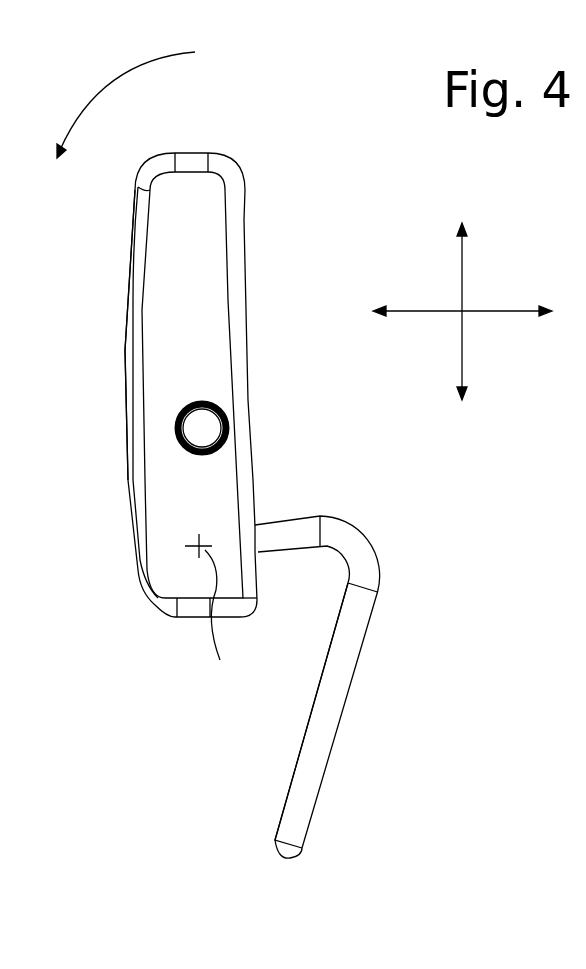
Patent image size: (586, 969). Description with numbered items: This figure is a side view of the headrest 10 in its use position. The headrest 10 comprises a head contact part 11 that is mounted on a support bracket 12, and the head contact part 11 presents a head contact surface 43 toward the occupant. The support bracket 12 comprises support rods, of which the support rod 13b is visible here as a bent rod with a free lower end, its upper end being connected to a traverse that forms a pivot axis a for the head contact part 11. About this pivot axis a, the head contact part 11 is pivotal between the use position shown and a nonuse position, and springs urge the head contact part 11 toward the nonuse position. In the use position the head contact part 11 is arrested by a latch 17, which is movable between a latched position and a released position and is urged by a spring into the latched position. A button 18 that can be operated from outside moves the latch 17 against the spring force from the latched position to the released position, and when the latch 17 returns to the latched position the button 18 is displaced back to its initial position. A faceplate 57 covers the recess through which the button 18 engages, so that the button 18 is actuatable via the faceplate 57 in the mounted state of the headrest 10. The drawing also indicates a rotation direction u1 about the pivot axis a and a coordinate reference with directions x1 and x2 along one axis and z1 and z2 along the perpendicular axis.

The headrest 10 is at (313, 167).
The head contact part 11 is at (243, 283).
The support bracket 12 is at (364, 629).
The support rod 13b is at (320, 748).
The latch 17 is at (210, 418).
The button 18 is at (230, 432).
The head contact surface 43 is at (126, 352).
The faceplate 57 is at (177, 432).
The pivot axis a is at (208, 611).
The rotation direction u1 is at (118, 105).
The x axis direction x1 is at (417, 326).
The x axis direction x2 is at (510, 326).
The z axis direction z1 is at (472, 267).
The z axis direction z2 is at (475, 359).